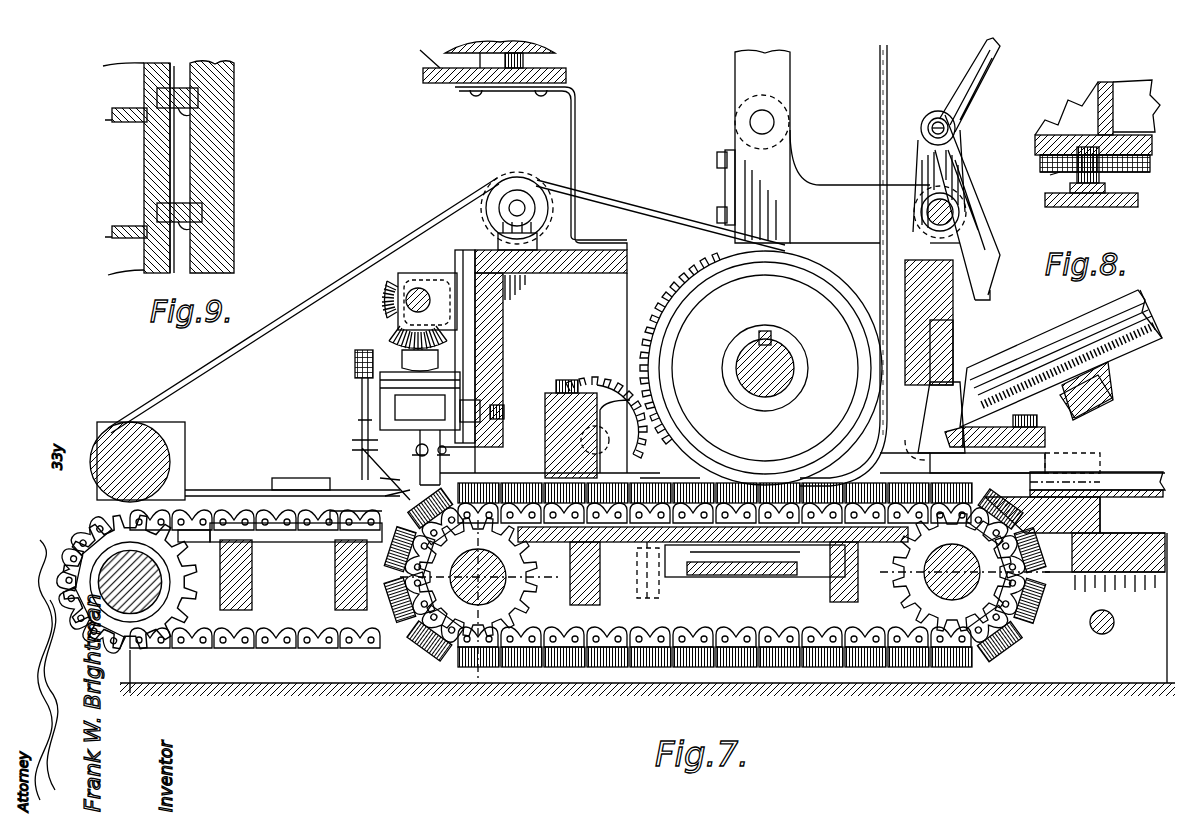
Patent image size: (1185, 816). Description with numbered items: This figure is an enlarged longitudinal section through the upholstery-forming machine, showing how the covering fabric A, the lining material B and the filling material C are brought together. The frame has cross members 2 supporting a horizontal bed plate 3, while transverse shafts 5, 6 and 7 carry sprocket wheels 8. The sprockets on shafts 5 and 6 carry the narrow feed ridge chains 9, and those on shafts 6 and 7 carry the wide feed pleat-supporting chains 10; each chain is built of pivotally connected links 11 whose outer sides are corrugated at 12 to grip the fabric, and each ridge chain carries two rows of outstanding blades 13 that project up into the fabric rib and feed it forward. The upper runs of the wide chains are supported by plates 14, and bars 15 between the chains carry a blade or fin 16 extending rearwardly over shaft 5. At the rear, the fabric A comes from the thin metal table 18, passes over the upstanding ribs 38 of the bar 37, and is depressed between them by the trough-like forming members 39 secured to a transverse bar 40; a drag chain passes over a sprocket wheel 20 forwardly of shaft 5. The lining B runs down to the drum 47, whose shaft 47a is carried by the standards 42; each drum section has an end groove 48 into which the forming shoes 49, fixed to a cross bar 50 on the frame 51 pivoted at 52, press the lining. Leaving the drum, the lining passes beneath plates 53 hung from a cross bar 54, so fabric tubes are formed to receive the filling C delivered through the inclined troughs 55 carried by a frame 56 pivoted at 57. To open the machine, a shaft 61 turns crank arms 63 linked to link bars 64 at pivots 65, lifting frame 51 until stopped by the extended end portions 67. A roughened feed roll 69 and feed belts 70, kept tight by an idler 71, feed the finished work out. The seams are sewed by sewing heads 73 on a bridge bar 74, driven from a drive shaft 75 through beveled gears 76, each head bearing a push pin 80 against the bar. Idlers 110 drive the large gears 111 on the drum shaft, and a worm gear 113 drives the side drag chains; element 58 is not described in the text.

In FIG. 7, the cross members 2 is at (252, 580).
In FIG. 7, the bed plate 3 is at (621, 543).
In FIG. 8, the bed plate 3 is at (1070, 207).
In FIG. 7, the transverse shaft 5 is at (485, 575).
In FIG. 7, the transverse shaft 6 is at (925, 575).
In FIG. 7, the forward transverse shaft 7 is at (118, 568).
In FIG. 7, the sprocket wheels 8 is at (168, 590).
In FIG. 7, the feed ridge chains 9 is at (700, 590).
In FIG. 8, the feed ridge chains 9 is at (1105, 187).
In FIG. 7, the feed pleat-supporting chains 10 is at (318, 650).
In FIG. 7, the links 11 is at (232, 650).
In FIG. 7, the corrugated or roughened side 12 is at (208, 650).
In FIG. 7, the blades 13 is at (476, 668).
In FIG. 8, the blades 13 is at (1060, 175).
In FIG. 7, the plates 14 is at (203, 542).
In FIG. 7, the bars 15 is at (292, 543).
In FIG. 7, the blade or fin 16 is at (390, 495).
In FIG. 7, the thin metal table 18 is at (1115, 507).
In FIG. 7, the sprocket wheel 20 is at (285, 472).
In FIG. 7, the bar 37 is at (1058, 540).
In FIG. 7, the upstanding ribs 38 is at (1005, 485).
In FIG. 7, the trough-like forming members 39 is at (1088, 463).
In FIG. 7, the transverse bar 40 is at (1035, 437).
In FIG. 7, the standards 42 is at (735, 186).
In FIG. 7, the drum 47 is at (765, 368).
In FIG. 9, the drum 47 is at (137, 169).
In FIG. 8, the drum 47 is at (1040, 135).
In FIG. 7, the shaft 47a is at (745, 388).
In FIG. 7, the end groove 48 is at (668, 310).
In FIG. 9, the end groove 48 is at (157, 96).
In FIG. 8, the end groove 48 is at (1086, 146).
In FIG. 7, the shoes 49 is at (904, 441).
In FIG. 9, the shoes 49 is at (185, 115).
In FIG. 7, the cross bar 50 is at (905, 290).
In FIG. 9, the cross bar 50 is at (220, 167).
In FIG. 7, the frame 51 is at (840, 197).
In FIG. 7, the pivot 52 is at (750, 122).
In FIG. 7, the plates 53 is at (488, 490).
In FIG. 7, the cross bar 54 is at (545, 400).
In FIG. 7, the inclined troughs 55 is at (1061, 358).
In FIG. 7, the frame 56 is at (1138, 368).
In FIG. 7, the pivot 57 is at (1095, 408).
In FIG. 7, the roller 58 is at (1093, 632).
In FIG. 7, the shaft 61 is at (928, 210).
In FIG. 7, the crank arms 63 is at (925, 160).
In FIG. 7, the link bars 64 is at (985, 248).
In FIG. 7, the pivot 65 is at (957, 128).
In FIG. 7, the extended end portion 67 is at (980, 76).
In FIG. 7, the roughened feed roll 69 is at (170, 452).
In FIG. 7, the feed belts 70 is at (295, 322).
In FIG. 7, the idler 71 is at (505, 188).
In FIG. 7, the sewing heads 73 is at (400, 392).
In FIG. 7, the transverse bridge bar 74 is at (466, 260).
In FIG. 7, the drive shaft 75 is at (420, 290).
In FIG. 7, the beveled gears 76 is at (390, 337).
In FIG. 7, the push pin 80 is at (482, 418).
In FIG. 7, the idlers 110 is at (608, 380).
In FIG. 7, the large gears 111 is at (680, 282).
In FIG. 7, the worm gear 113 is at (742, 577).
In FIG. 7, the covering or surface fabric A is at (1097, 476).
In FIG. 8, the covering or surface fabric A is at (1045, 172).
In FIG. 7, the inner or lining material B is at (878, 88).
In FIG. 8, the inner or lining material B is at (1040, 157).
In FIG. 8, the filling or stuffing material C is at (1040, 163).